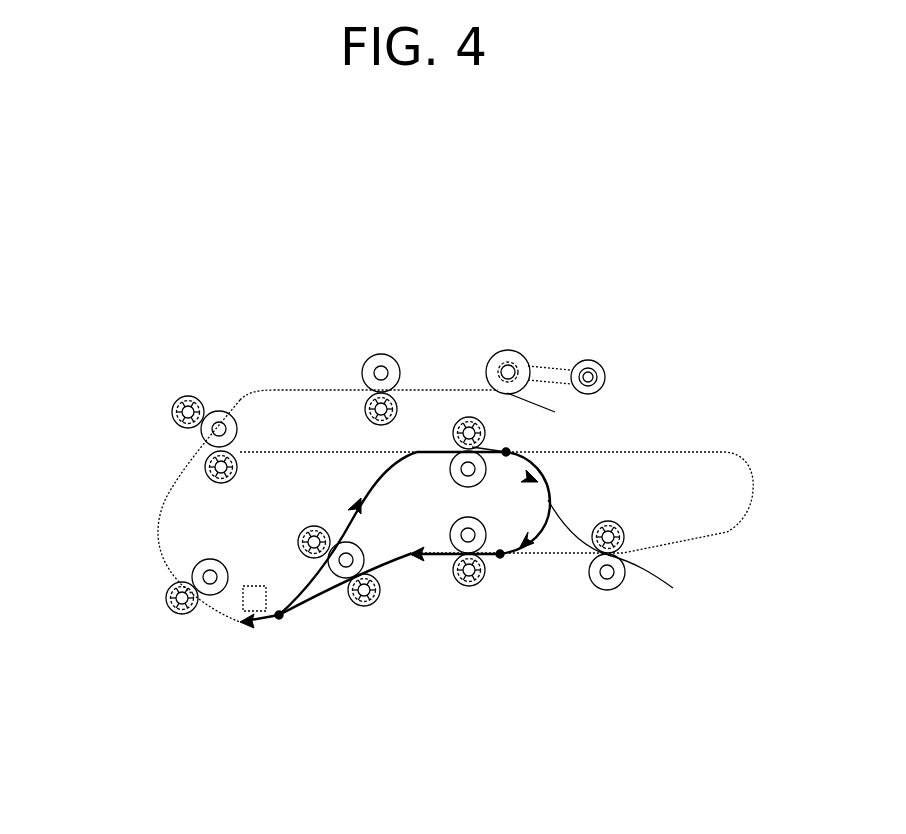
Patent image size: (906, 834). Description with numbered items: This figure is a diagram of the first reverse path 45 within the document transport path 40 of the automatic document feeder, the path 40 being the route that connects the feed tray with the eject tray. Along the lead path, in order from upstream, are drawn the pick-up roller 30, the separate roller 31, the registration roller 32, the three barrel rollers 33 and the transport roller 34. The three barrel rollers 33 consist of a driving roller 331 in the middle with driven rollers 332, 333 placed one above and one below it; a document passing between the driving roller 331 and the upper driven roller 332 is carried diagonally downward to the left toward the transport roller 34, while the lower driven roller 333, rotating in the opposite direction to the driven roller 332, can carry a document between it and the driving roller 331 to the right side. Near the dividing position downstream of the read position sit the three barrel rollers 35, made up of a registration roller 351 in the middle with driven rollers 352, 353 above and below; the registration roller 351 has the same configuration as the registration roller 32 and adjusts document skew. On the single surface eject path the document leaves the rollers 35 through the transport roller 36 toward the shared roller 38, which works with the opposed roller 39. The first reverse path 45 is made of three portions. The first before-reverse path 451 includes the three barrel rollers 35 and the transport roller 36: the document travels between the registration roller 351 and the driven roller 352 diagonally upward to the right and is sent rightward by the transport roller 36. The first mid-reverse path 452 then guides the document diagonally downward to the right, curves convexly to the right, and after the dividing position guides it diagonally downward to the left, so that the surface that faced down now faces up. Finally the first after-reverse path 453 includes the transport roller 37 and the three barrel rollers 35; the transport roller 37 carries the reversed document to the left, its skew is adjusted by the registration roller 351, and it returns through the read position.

The pick-up roller 30 is at (588, 360).
The separate roller 31 is at (508, 350).
The registration roller 32 is at (380, 354).
The three barrel rollers 33 is at (90, 404).
The driving roller 331 is at (202, 432).
The driven roller 332 is at (172, 412).
The driven roller 333 is at (205, 467).
The transport roller 34 is at (222, 561).
The three barrel rollers 35 is at (246, 652).
The registration roller 351 is at (346, 579).
The driven roller 352 is at (318, 559).
The driven roller 353 is at (366, 607).
The transport roller 36 is at (453, 477).
The transport roller 37 is at (452, 529).
The shared roller 38 is at (617, 589).
The opposed roller 39 is at (616, 523).
The document transport path 40 is at (690, 322).
The first reverse path 45 is at (552, 470).
The first before-reverse path 451 is at (362, 476).
The first mid-reverse path 452 is at (538, 548).
The first after-reverse path 453 is at (400, 565).